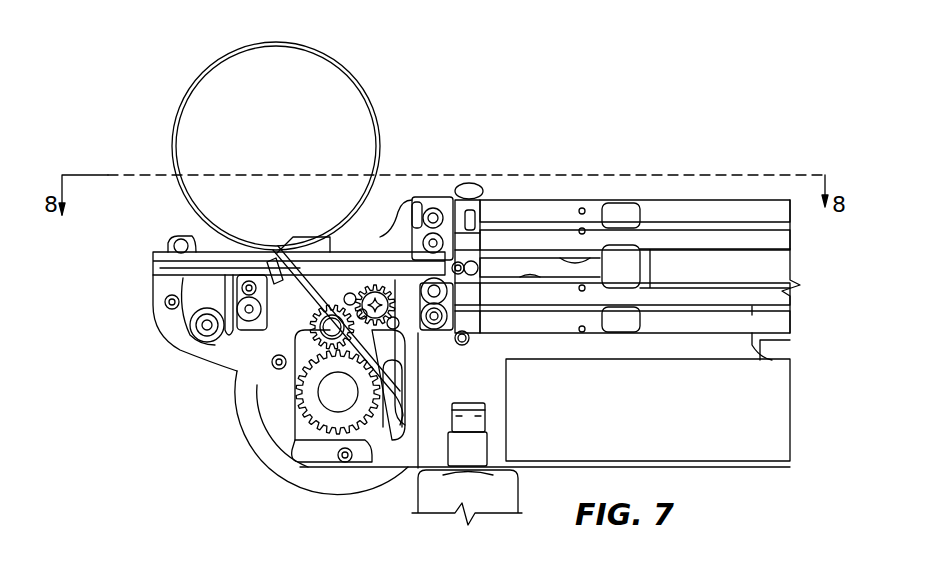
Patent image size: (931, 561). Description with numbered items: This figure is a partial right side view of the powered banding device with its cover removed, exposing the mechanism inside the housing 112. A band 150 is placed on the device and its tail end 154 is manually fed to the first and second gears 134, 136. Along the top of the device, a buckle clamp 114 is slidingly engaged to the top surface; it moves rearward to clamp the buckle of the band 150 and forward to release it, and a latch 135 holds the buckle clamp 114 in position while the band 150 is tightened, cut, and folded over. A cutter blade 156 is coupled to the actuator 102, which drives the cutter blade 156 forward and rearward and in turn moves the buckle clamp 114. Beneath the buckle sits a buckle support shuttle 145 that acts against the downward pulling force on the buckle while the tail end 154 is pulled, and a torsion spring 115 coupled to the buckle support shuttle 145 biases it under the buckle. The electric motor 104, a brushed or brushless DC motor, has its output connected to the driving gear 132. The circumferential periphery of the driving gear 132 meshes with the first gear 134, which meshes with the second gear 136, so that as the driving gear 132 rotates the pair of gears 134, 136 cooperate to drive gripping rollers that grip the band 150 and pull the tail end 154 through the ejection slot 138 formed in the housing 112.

The actuator 102 is at (618, 136).
The electric motor 104 is at (322, 483).
The housing 112 is at (173, 338).
The buckle clamp 114 is at (178, 236).
The torsion spring 115 is at (200, 306).
The driving gear 132 is at (297, 402).
The first gear 134 is at (322, 323).
The latch 135 is at (388, 225).
The second gear 136 is at (425, 332).
The ejection slot 138 is at (405, 408).
The buckle support shuttle 145 is at (160, 252).
The band 150 is at (373, 103).
The tail end 154 is at (277, 256).
The cutter blade 156 is at (330, 252).